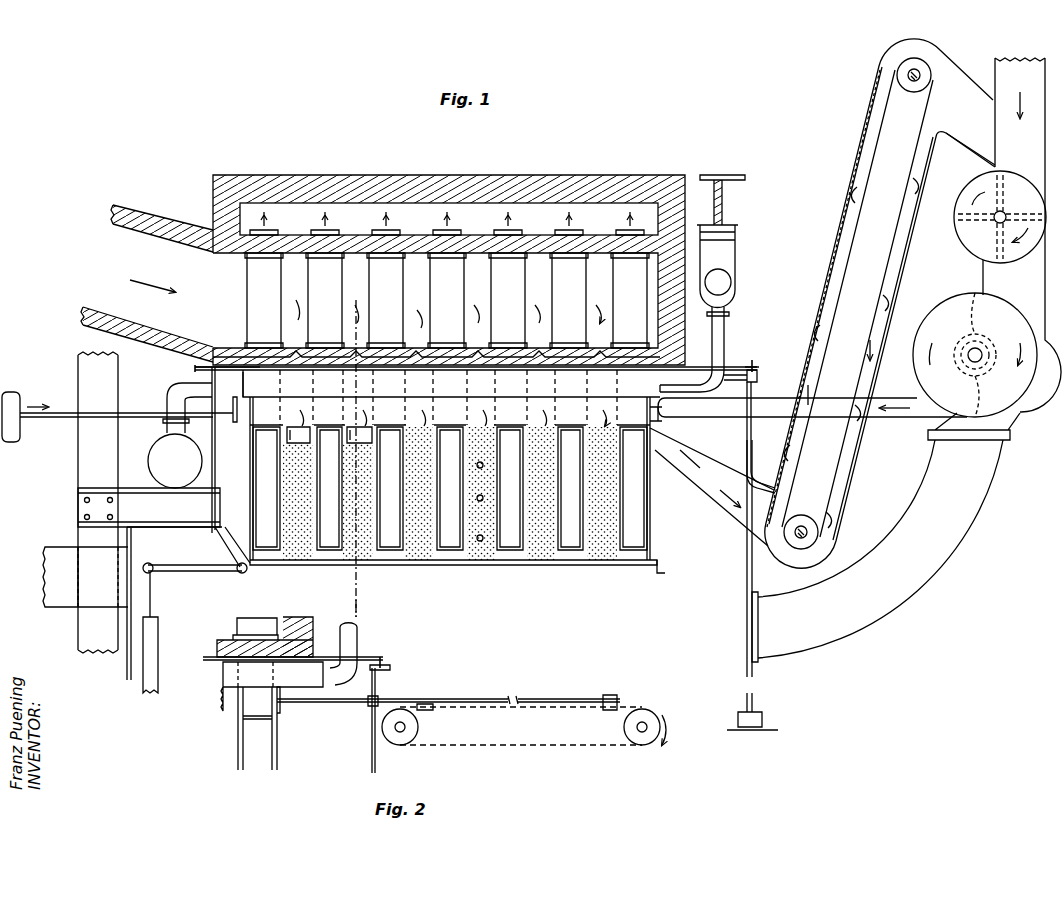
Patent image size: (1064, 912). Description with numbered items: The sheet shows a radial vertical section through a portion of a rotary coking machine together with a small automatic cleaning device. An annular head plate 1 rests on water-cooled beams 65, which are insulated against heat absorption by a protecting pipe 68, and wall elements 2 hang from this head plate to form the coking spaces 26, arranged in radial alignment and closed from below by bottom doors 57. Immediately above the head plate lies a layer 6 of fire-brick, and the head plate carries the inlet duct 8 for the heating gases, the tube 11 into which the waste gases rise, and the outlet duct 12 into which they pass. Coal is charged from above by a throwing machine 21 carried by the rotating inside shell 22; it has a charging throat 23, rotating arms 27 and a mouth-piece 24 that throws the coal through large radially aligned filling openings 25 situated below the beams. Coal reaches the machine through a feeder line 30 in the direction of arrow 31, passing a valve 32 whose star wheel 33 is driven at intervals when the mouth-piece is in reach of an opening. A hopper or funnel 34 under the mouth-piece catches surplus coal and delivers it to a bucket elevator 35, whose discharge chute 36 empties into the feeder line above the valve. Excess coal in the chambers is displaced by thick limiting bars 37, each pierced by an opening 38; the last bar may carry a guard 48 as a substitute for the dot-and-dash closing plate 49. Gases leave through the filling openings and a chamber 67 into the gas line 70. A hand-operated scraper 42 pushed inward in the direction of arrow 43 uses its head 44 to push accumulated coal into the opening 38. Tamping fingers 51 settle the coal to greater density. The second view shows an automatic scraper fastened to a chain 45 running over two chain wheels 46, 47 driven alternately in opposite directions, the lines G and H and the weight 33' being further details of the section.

In FIG. 1, the annular head plate 1 is at (745, 366).
In FIG. 2, the annular head plate 1 is at (205, 663).
In FIG. 1, the wall elements 2 is at (252, 482).
In FIG. 2, the wall elements 2 is at (278, 740).
In FIG. 1, the layer of fire-brick 6 is at (480, 352).
In FIG. 2, the layer of fire-brick 6 is at (224, 642).
In FIG. 1, the inlet duct 8 is at (600, 257).
In FIG. 1, the tube 11 is at (322, 280).
In FIG. 1, the outlet duct 12 is at (478, 210).
In FIG. 1, the throwing machine 21 is at (1012, 400).
In FIG. 1, the rotating inside shell 22 is at (747, 566).
In FIG. 1, the charging throat 23 is at (751, 415).
In FIG. 1, the mouth-piece 24 is at (666, 415).
In FIG. 1, the filling openings 25 is at (642, 418).
In FIG. 2, the filling openings 25 is at (240, 717).
In FIG. 1, the coking spaces 26 is at (300, 565).
In FIG. 1, the rotating arms 27 is at (972, 295).
In FIG. 1, the feeder line 30 is at (1010, 60).
In FIG. 1, the arrow 31 is at (1013, 93).
In FIG. 1, the valve 32 is at (1037, 250).
In FIG. 1, the star wheel 33 is at (968, 157).
In FIG. 1, the counterweight 33' is at (129, 641).
In FIG. 1, the hopper or funnel 34 is at (708, 487).
In FIG. 1, the bucket elevator 35 is at (840, 458).
In FIG. 1, the discharge chute 36 is at (958, 130).
In FIG. 1, the limiting bar 37 is at (312, 440).
In FIG. 1, the opening 38 is at (305, 430).
In FIG. 1, the hand-operated scraper 42 is at (12, 438).
In FIG. 2, the hand-operated scraper 42 is at (318, 702).
In FIG. 1, the arrow 43 is at (40, 392).
In FIG. 1, the scraper plate or head 44 is at (236, 420).
In FIG. 2, the chain 45 is at (568, 745).
In FIG. 2, the chain wheel 46 is at (403, 732).
In FIG. 2, the chain wheel 47 is at (643, 732).
In FIG. 1, the guard 48 is at (295, 402).
In FIG. 1, the closing plate 49 is at (260, 398).
In FIG. 1, the tamping fingers 51 is at (477, 537).
In FIG. 1, the bottom doors 57 is at (657, 568).
In FIG. 1, the water-cooled beams 65 is at (758, 378).
In FIG. 1, the chamber 67 is at (170, 590).
In FIG. 1, the protecting pipe 68 is at (690, 395).
In FIG. 2, the protecting pipe 68 is at (228, 680).
In FIG. 1, the gas line 70 is at (62, 552).
In FIG. 1, the center line G is at (351, 449).
In FIG. 2, the center line H is at (366, 616).